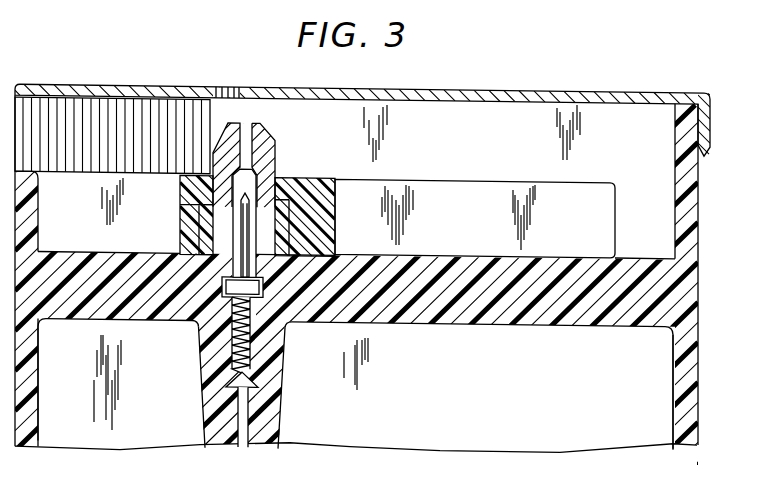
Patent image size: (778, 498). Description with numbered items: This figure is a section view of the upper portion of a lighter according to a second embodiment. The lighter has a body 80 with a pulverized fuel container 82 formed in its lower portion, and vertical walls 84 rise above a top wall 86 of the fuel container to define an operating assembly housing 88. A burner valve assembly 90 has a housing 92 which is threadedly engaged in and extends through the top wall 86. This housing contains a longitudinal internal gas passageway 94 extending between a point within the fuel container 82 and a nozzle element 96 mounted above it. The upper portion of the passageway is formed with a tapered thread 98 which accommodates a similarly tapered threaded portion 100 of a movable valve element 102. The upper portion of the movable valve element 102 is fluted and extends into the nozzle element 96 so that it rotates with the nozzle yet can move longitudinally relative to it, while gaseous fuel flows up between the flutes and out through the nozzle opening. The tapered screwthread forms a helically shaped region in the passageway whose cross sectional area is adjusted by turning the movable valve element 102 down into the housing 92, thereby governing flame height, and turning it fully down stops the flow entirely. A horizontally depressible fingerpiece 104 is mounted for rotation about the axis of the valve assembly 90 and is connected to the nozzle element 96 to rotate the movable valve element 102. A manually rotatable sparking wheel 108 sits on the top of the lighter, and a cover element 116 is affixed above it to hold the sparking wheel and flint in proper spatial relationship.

The body 80 is at (706, 303).
The pulverized fuel container 82 is at (568, 392).
The vertical walls 84 is at (38, 221).
The top wall 86 is at (430, 318).
The operating assembly housing 88 is at (446, 147).
The burner valve assembly 90 is at (185, 323).
The housing 92 is at (286, 342).
The longitudinal internal gas passageway 94 is at (238, 418).
The nozzle element 96 is at (275, 148).
The tapered thread 98 is at (233, 357).
The tapered threaded portion 100 is at (230, 339).
The movable valve element 102 is at (185, 275).
The horizontally depressible fingerpiece 104 is at (472, 174).
The sparking wheel 108 is at (30, 93).
The cover element 116 is at (618, 86).